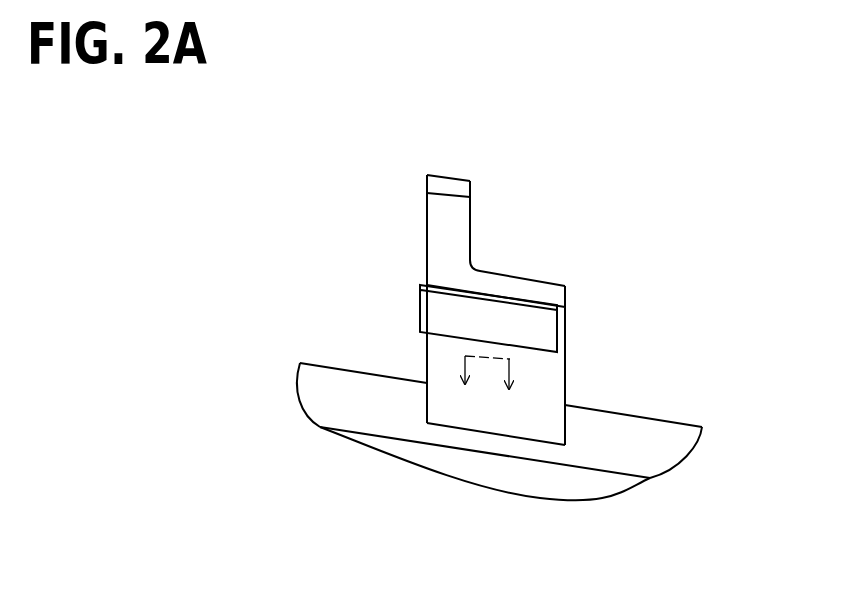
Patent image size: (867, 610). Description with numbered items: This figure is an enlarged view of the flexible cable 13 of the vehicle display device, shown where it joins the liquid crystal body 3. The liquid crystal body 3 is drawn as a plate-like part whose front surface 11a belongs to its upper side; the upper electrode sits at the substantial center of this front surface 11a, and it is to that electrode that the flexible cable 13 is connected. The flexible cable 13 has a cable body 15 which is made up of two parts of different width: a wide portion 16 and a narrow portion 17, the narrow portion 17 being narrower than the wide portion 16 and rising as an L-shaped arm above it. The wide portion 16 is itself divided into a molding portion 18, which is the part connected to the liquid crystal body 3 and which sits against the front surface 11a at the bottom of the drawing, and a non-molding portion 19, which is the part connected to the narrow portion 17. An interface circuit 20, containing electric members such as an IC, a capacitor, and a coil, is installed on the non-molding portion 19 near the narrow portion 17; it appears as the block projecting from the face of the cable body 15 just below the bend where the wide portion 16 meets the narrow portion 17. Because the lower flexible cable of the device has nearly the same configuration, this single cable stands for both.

The liquid crystal body 3 is at (547, 467).
The front surface 11a is at (681, 440).
The flexible cable 13 is at (508, 310).
The cable body 15 is at (480, 263).
The wide portion 16 is at (418, 377).
The narrow portion 17 is at (422, 215).
The molding portion 18 is at (565, 425).
The non-molding portion 19 is at (567, 357).
The interface circuit 20 is at (432, 298).